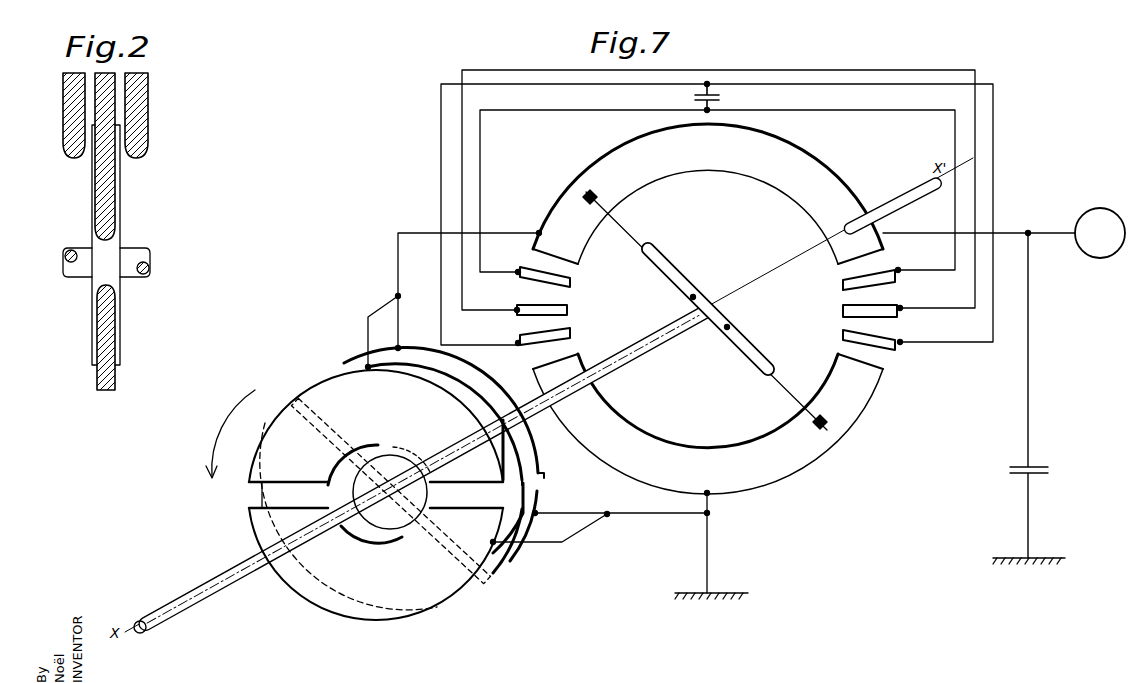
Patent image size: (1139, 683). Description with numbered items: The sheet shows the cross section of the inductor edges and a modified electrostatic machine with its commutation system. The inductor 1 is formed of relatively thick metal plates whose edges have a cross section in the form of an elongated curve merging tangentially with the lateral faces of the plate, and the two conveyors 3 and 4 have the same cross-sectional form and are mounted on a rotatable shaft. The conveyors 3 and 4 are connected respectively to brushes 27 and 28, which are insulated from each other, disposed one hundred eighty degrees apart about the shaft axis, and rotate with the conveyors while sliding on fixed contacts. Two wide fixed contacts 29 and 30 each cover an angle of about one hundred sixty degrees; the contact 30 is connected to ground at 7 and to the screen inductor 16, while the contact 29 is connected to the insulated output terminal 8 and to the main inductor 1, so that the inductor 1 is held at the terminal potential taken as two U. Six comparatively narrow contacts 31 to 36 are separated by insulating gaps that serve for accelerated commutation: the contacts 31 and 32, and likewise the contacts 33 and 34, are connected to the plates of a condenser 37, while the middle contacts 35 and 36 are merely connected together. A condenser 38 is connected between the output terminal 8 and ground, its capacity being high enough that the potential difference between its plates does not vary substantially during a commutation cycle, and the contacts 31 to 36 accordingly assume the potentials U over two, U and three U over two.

In FIG. 2, the inductor 1 is at (70, 105).
In FIG. 7, the inductor 1 is at (386, 483).
In FIG. 2, the conveyor 3 is at (100, 170).
In FIG. 7, the conveyor 3 is at (514, 468).
In FIG. 2, the conveyor 4 is at (99, 315).
In FIG. 7, the conveyor 4 is at (263, 493).
In FIG. 7, the ground 7 is at (712, 593).
In FIG. 7, the insulated output terminal 8 is at (1098, 258).
In FIG. 7, the screen inductor 16 is at (507, 553).
In FIG. 7, the brush 27 is at (588, 194).
In FIG. 7, the brush 28 is at (823, 428).
In FIG. 7, the fixed contact 29 is at (808, 166).
In FIG. 7, the fixed contact 30 is at (763, 477).
In FIG. 7, the narrow fixed contact 31 is at (532, 343).
In FIG. 7, the narrow fixed contact 32 is at (528, 277).
In FIG. 7, the narrow fixed contact 33 is at (888, 367).
In FIG. 7, the narrow fixed contact 34 is at (898, 272).
In FIG. 7, the middle contact 35 is at (528, 313).
In FIG. 7, the middle contact 36 is at (902, 307).
In FIG. 7, the condenser 37 is at (710, 84).
In FIG. 7, the condenser 38 is at (1036, 467).